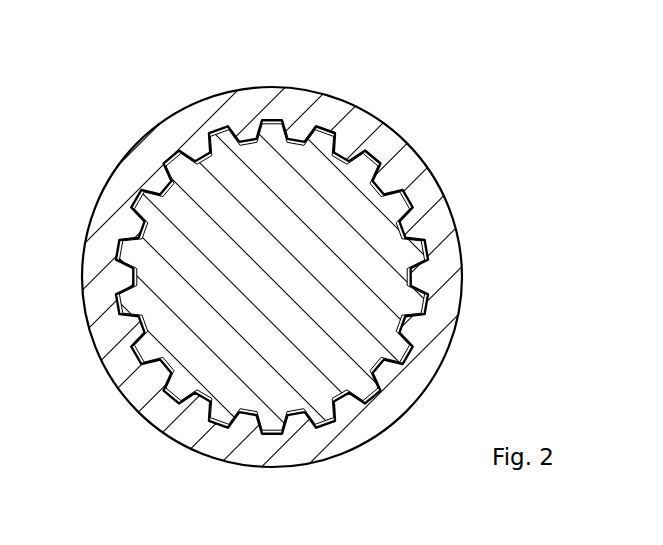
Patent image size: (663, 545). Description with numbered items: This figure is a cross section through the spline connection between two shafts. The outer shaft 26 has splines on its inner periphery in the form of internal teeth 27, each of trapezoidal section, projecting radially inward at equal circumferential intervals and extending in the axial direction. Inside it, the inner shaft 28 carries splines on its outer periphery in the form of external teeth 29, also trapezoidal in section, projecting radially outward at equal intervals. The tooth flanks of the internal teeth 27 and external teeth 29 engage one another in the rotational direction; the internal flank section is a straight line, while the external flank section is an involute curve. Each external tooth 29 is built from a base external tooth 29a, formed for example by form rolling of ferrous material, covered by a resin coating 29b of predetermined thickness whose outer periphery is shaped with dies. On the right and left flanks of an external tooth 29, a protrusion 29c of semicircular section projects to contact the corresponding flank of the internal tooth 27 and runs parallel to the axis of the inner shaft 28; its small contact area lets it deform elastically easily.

The outer shaft 26 is at (187, 132).
The internal teeth 27 is at (308, 132).
The inner shaft 28 is at (193, 231).
The external teeth 29 is at (336, 141).
The base external teeth 29a is at (380, 144).
The resin coating 29b is at (337, 130).
The protrusion 29c is at (264, 128).